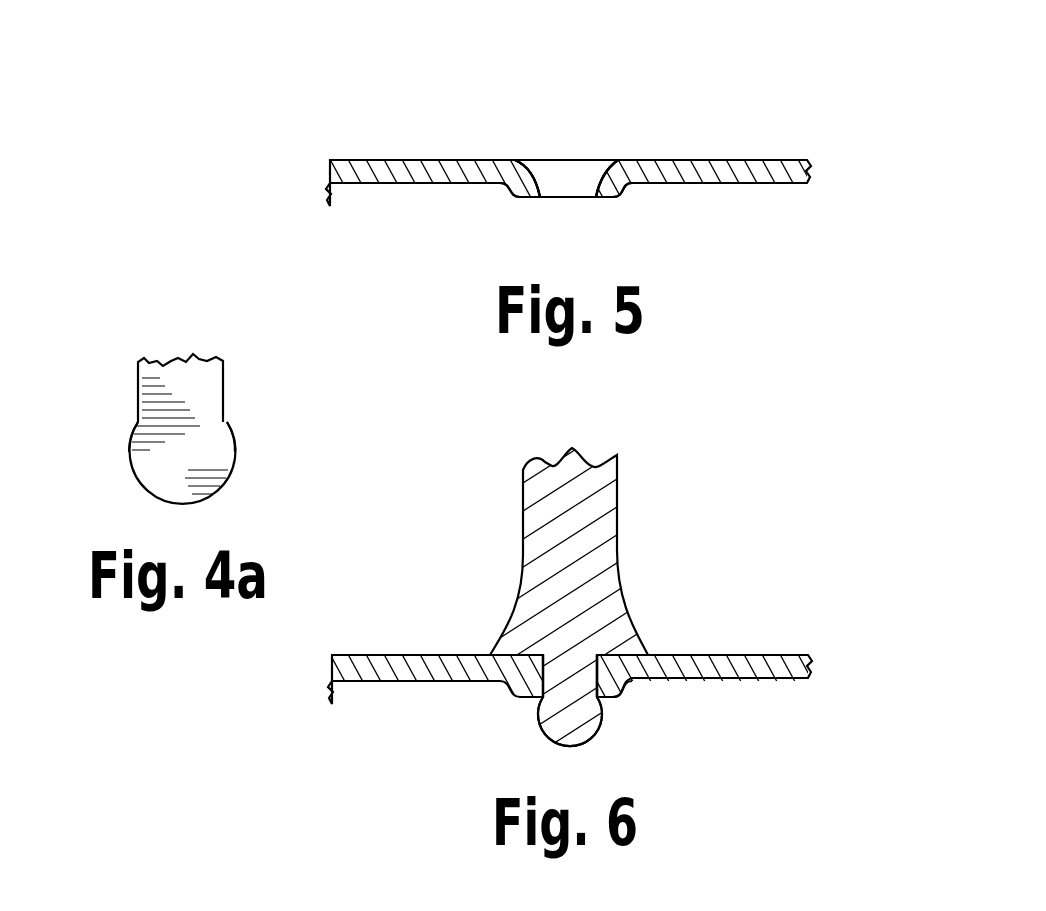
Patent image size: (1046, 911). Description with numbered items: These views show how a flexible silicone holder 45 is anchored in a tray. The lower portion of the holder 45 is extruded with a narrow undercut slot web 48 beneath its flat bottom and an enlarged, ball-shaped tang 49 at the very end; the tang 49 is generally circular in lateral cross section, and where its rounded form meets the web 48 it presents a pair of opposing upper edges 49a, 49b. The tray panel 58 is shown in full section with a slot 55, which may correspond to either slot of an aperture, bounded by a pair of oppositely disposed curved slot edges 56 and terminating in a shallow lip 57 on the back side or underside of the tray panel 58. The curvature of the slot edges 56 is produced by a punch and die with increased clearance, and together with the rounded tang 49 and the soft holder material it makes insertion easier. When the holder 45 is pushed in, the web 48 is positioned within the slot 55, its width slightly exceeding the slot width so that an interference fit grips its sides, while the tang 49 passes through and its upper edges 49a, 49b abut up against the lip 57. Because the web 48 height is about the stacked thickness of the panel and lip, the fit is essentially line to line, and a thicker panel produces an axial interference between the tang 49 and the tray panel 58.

In FIG. 6, the holder 45 is at (608, 563).
In FIG. 4A, the undercut slot web 48 is at (195, 383).
In FIG. 6, the undercut slot web 48 is at (540, 657).
In FIG. 4A, the ball-shaped tang 49 is at (224, 468).
In FIG. 6, the ball-shaped tang 49 is at (575, 728).
In FIG. 4A, the upper edge of tang 49a is at (138, 422).
In FIG. 4A, the upper edge of tang 49b is at (227, 422).
In FIG. 5, the slot 55 is at (605, 123).
In FIG. 5, the curved slot edges 56 is at (540, 177).
In FIG. 6, the curved slot edges 56 is at (613, 654).
In FIG. 5, the lip 57 is at (525, 200).
In FIG. 6, the lip 57 is at (610, 693).
In FIG. 5, the tray panel 58 is at (413, 159).
In FIG. 6, the tray panel 58 is at (720, 655).